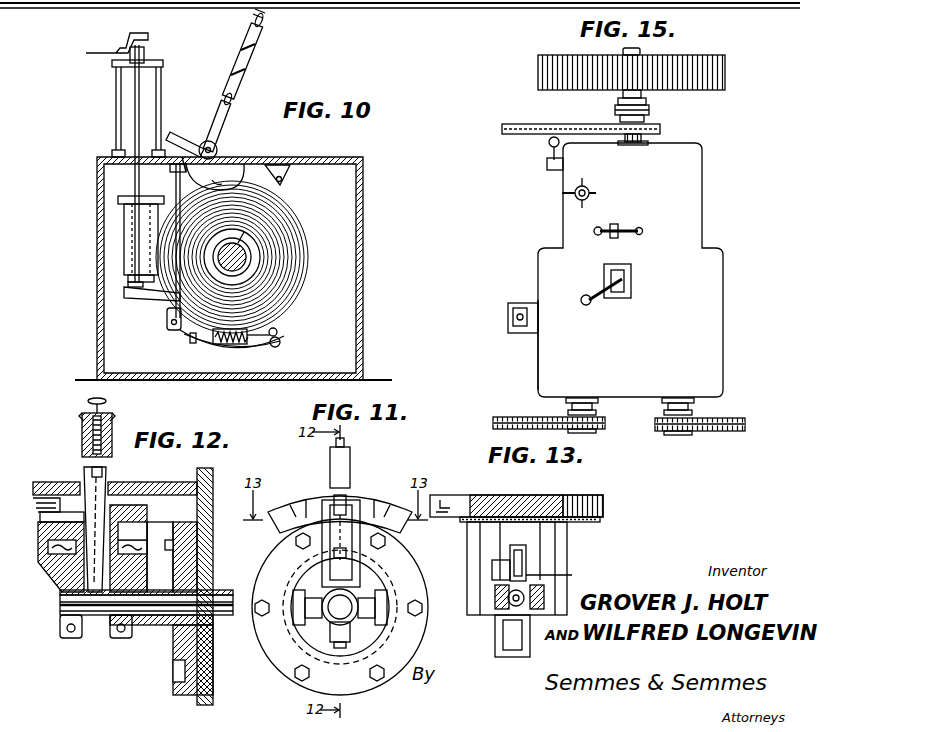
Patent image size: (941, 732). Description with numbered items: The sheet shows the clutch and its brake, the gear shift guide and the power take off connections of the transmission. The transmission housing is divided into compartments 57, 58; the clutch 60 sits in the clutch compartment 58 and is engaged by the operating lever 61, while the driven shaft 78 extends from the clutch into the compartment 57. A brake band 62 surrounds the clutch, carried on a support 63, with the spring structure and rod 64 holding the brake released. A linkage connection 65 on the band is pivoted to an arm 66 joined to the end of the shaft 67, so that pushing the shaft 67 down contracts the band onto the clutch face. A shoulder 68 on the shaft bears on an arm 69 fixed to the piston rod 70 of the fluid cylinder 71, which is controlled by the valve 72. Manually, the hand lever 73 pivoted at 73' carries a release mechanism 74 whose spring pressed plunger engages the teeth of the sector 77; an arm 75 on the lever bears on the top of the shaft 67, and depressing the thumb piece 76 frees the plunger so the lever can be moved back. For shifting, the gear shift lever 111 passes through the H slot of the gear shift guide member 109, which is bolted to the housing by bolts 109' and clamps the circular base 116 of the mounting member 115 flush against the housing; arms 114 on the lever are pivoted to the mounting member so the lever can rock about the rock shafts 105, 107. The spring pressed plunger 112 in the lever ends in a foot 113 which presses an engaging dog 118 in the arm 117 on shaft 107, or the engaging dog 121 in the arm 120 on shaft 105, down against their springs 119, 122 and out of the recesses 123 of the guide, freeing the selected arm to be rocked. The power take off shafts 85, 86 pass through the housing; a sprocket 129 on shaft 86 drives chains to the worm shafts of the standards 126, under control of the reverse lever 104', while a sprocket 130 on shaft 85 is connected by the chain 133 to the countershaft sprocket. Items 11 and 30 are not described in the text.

In FIG. 15, the plate 11 is at (528, 130).
In FIG. 15, the knurled wheel 30 is at (725, 72).
In FIG. 15, the compartment 57 is at (723, 305).
In FIG. 12, the compartment 57 is at (213, 480).
In FIG. 15, the clutch compartment 58 is at (702, 208).
In FIG. 10, the clutch 60 is at (298, 266).
In FIG. 15, the operating lever 61 is at (547, 155).
In FIG. 10, the brake band 62 is at (305, 232).
In FIG. 10, the brake band support 63 is at (290, 180).
In FIG. 10, the spring structure and rod 64 is at (192, 343).
In FIG. 10, the linkage connection 65 is at (280, 338).
In FIG. 10, the arm 66 is at (264, 352).
In FIG. 10, the shaft 67 is at (181, 220).
In FIG. 10, the shoulder 68 is at (167, 318).
In FIG. 10, the arm 69 is at (124, 290).
In FIG. 10, the piston rod 70 is at (128, 284).
In FIG. 10, the fluid cylinder 71 is at (124, 221).
In FIG. 10, the valve 72 is at (108, 62).
In FIG. 10, the hand lever 73 is at (256, 61).
In FIG. 15, the hand lever 73 is at (628, 219).
In FIG. 10, the pivot 73' is at (231, 129).
In FIG. 10, the release mechanism 74 is at (236, 105).
In FIG. 10, the arm 75 is at (186, 134).
In FIG. 10, the thumb piece 76 is at (264, 20).
In FIG. 10, the sector 77 is at (218, 190).
In FIG. 10, the driven shaft 78 is at (244, 232).
In FIG. 15, the power take off shaft 85 is at (694, 413).
In FIG. 15, the power take off shaft 86 is at (598, 410).
In FIG. 15, the reverse lever 104' is at (606, 296).
In FIG. 12, the rock shaft 105 is at (60, 607).
In FIG. 11, the rock shaft 105 is at (344, 612).
In FIG. 13, the rock shaft 105 is at (443, 631).
In FIG. 12, the rock shaft 107 is at (150, 625).
In FIG. 13, the rock shaft 107 is at (526, 560).
In FIG. 12, the gear shift guide member 109 is at (220, 520).
In FIG. 11, the gear shift guide member 109 is at (321, 594).
In FIG. 13, the gear shift guide member 109 is at (538, 506).
In FIG. 11, the bolts 109' is at (253, 630).
In FIG. 15, the gear shift lever 111 is at (508, 322).
In FIG. 12, the gear shift lever 111 is at (82, 437).
In FIG. 11, the gear shift lever 111 is at (350, 462).
In FIG. 12, the spring pressed plunger 112 is at (112, 420).
In FIG. 12, the foot 113 is at (91, 510).
In FIG. 13, the foot 113 is at (500, 612).
In FIG. 12, the arms 114 is at (96, 620).
In FIG. 11, the arms 114 is at (350, 538).
In FIG. 13, the arms 114 is at (467, 558).
In FIG. 12, the mounting member 115 is at (185, 570).
In FIG. 11, the mounting member 115 is at (300, 636).
In FIG. 13, the mounting member 115 is at (540, 540).
In FIG. 12, the base 116 is at (190, 548).
In FIG. 11, the base 116 is at (275, 670).
In FIG. 13, the base 116 is at (590, 493).
In FIG. 12, the arm 117 is at (156, 578).
In FIG. 13, the arm 117 is at (566, 573).
In FIG. 12, the engaging dog 118 is at (140, 482).
In FIG. 12, the spring 119 is at (147, 560).
In FIG. 12, the arm 120 is at (62, 584).
In FIG. 11, the arm 120 is at (352, 564).
In FIG. 13, the arm 120 is at (495, 645).
In FIG. 12, the engaging dog 121 is at (40, 517).
In FIG. 11, the engaging dog 121 is at (360, 498).
In FIG. 13, the engaging dog 121 is at (500, 657).
In FIG. 12, the spring 122 is at (40, 562).
In FIG. 12, the recesses 123 is at (36, 500).
In FIG. 11, the recesses 123 is at (300, 495).
In FIG. 15, the standards 126 is at (510, 422).
In FIG. 15, the sprocket 129 is at (578, 433).
In FIG. 15, the sprocket 130 is at (676, 435).
In FIG. 15, the chain 133 is at (735, 431).